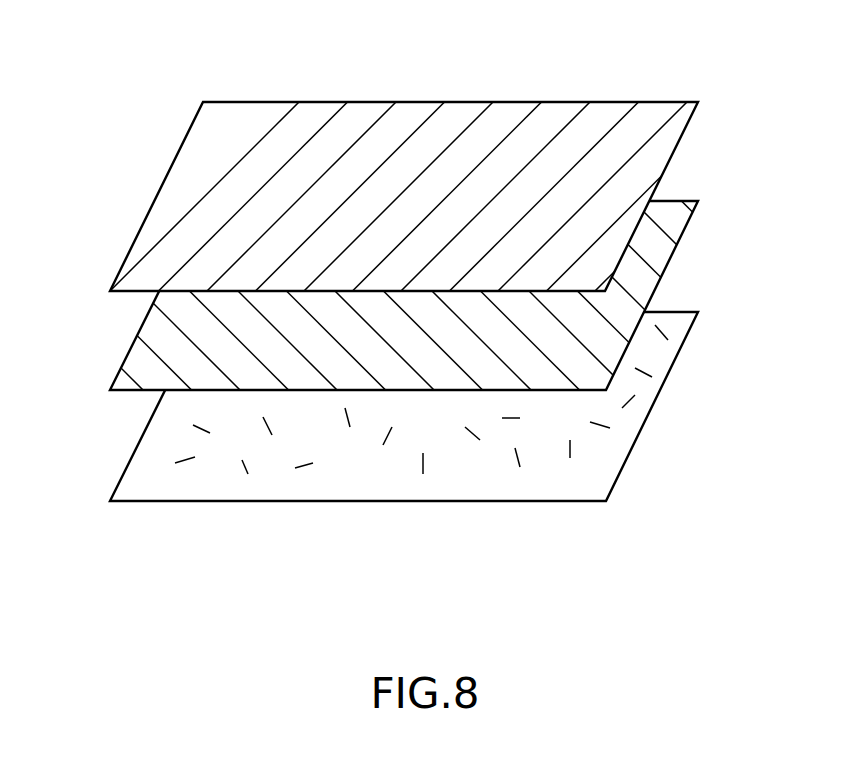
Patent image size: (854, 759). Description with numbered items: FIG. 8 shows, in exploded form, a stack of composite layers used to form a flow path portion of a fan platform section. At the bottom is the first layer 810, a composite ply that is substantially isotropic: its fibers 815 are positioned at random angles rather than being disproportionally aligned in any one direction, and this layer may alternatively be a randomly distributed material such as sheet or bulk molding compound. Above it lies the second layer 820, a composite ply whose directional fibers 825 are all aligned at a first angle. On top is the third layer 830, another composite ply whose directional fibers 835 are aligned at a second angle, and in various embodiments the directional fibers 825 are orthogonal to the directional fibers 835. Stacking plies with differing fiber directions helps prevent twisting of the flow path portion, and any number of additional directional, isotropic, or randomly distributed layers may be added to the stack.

The first layer 810 is at (676, 312).
The fibers 815 is at (247, 476).
The second layer 820 is at (676, 201).
The directional fibers 825 is at (178, 330).
The third layer 830 is at (559, 101).
The directional fibers 835 is at (398, 147).